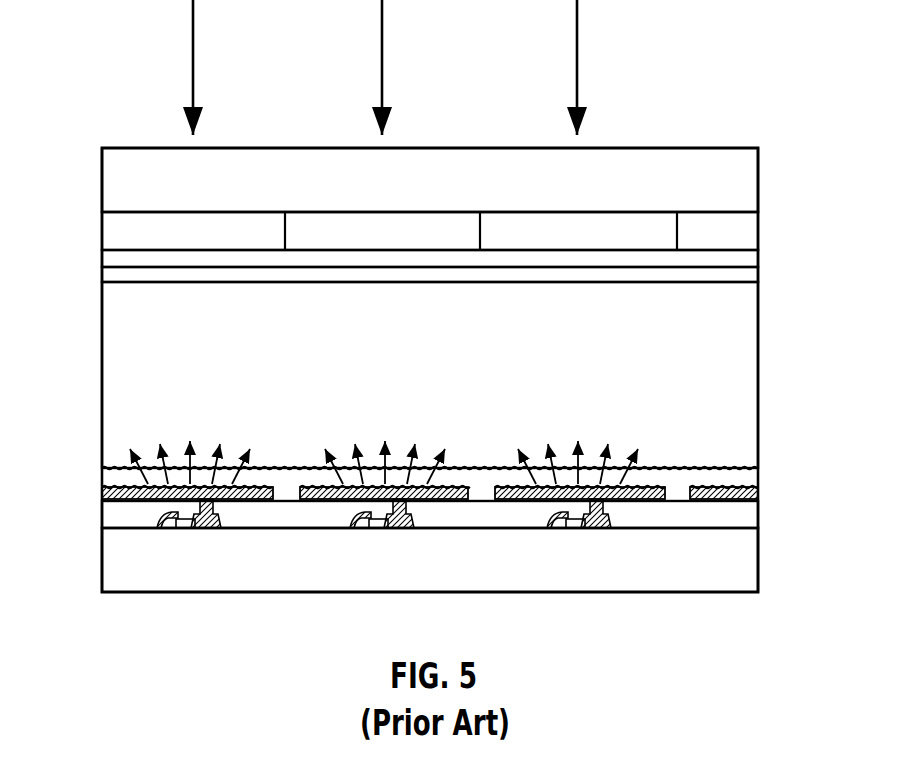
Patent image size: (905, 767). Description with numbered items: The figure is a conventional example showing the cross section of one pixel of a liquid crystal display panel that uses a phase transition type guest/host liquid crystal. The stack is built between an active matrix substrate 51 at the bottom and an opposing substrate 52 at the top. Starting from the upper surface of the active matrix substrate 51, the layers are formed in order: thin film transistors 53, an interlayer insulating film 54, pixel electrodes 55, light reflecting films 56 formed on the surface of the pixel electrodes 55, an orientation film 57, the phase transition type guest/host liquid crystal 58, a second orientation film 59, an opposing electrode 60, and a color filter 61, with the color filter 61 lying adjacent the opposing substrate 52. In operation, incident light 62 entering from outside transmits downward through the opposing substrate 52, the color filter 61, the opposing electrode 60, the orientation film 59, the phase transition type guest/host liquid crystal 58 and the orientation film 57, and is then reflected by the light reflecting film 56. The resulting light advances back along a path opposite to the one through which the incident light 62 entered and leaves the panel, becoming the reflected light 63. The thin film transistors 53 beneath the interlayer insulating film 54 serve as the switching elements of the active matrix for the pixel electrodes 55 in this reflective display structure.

The active matrix substrate 51 is at (117, 560).
The opposing substrate 52 is at (685, 158).
The thin film transistors 53 is at (577, 527).
The interlayer insulating film 54 is at (750, 520).
The pixel electrodes 55 is at (752, 498).
The light reflecting films 56 is at (749, 472).
The orientation film 57 is at (678, 466).
The phase transition type guest/host liquid crystal 58 is at (755, 348).
The orientation film 59 is at (750, 272).
The opposing electrode 60 is at (750, 258).
The color filter 61 is at (602, 222).
The incident light 62 is at (578, 22).
The reflected light 63 is at (600, 468).